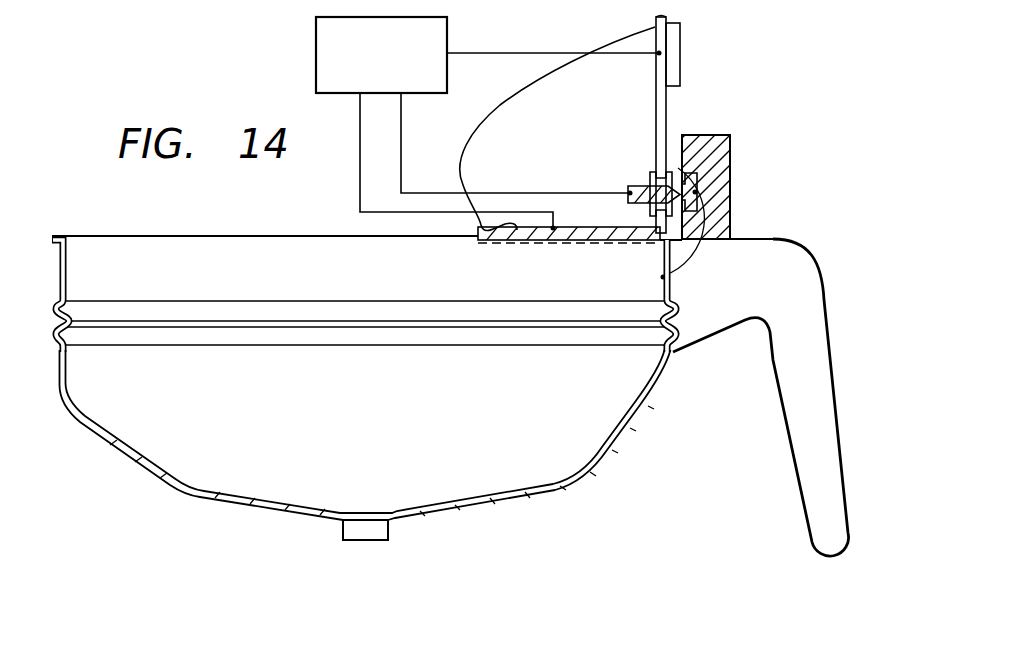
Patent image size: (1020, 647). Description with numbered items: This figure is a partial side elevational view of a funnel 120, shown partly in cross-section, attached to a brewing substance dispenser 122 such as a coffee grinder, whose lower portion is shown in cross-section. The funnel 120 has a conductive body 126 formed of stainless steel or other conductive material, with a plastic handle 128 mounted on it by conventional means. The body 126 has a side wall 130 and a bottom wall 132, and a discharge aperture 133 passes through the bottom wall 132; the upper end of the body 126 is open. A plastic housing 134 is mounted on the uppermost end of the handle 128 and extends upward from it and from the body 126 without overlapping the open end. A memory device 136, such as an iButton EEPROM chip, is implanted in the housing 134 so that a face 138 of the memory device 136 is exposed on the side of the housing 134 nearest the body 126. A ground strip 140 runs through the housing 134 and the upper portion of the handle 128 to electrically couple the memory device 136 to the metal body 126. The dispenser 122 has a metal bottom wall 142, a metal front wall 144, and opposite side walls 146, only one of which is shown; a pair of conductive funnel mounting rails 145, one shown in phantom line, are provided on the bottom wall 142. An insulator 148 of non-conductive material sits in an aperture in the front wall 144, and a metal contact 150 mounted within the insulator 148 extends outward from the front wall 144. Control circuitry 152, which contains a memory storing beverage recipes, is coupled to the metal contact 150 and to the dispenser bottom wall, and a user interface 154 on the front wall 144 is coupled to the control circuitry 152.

The funnel 120 is at (657, 398).
The brewing substance dispenser 122 is at (668, 110).
The conductive body 126 is at (610, 452).
The plastic handle 128 is at (800, 360).
The side wall 130 is at (633, 423).
The bottom wall 132 is at (494, 503).
The discharge aperture 133 is at (373, 543).
The plastic housing 134 is at (732, 190).
The memory device 136 is at (732, 152).
The face 138 is at (672, 175).
The ground strip 140 is at (705, 248).
The metal bottom wall 142 is at (498, 241).
The metal front wall 144 is at (655, 27).
The conductive funnel mounting rails 145 is at (572, 246).
The side walls 146 is at (483, 153).
The insulator 148 is at (650, 182).
The metal contact 150 is at (628, 192).
The control circuitry 152 is at (316, 52).
The user interface 154 is at (682, 53).